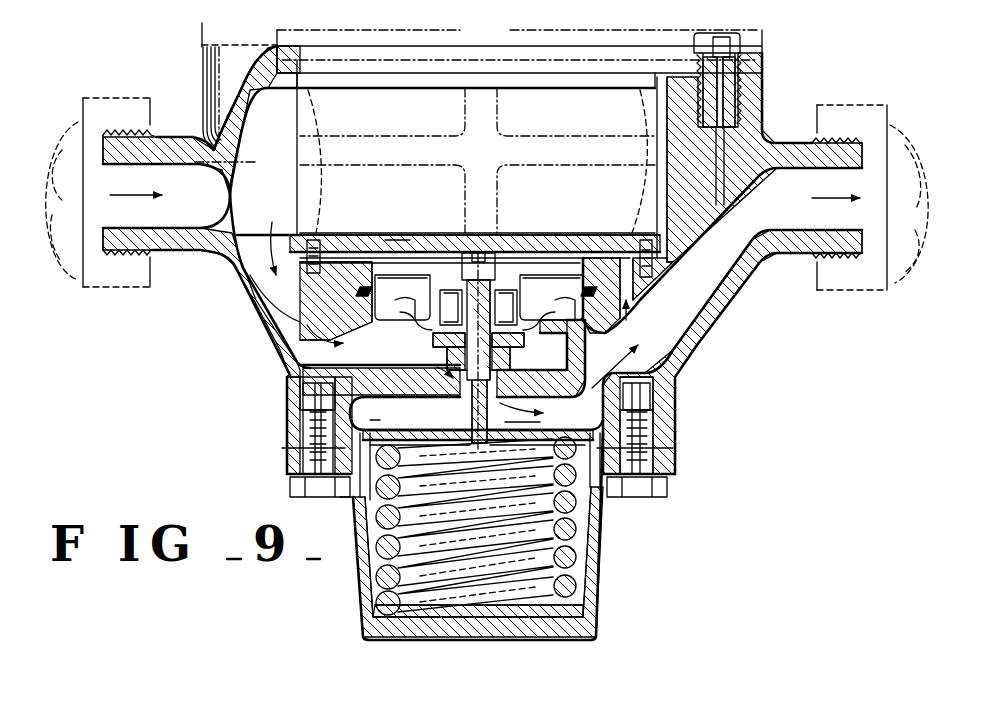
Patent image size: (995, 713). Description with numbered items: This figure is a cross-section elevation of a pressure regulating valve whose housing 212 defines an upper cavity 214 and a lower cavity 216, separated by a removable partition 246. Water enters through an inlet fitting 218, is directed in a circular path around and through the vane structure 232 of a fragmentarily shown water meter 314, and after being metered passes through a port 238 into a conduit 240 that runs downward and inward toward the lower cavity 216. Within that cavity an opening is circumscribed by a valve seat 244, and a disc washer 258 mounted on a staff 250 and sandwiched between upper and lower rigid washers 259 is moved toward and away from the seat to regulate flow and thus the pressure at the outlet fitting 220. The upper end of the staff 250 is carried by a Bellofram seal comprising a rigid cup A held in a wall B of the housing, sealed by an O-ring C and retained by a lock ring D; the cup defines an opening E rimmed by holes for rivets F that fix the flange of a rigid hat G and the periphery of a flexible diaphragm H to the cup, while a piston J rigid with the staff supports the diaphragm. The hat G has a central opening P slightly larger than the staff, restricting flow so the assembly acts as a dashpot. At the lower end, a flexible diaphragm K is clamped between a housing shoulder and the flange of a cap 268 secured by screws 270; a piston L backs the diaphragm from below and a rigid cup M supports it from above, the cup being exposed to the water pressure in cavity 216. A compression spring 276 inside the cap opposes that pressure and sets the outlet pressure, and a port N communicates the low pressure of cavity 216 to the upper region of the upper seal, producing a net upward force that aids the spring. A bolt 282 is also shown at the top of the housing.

The housing 212 is at (258, 338).
The upper cavity 214 is at (590, 125).
The lower cavity 216 is at (588, 416).
The inlet fitting 218 is at (183, 245).
The outlet fitting 220 is at (792, 247).
The vane structure 232 is at (348, 135).
The port 238 is at (270, 248).
The conduit 240 is at (268, 328).
The valve seat 244 is at (528, 352).
The partition 246 is at (560, 240).
The staff 250 is at (468, 392).
The disc washer 258 is at (435, 340).
The rigid discs or washers 259 is at (445, 356).
The cap 268 is at (656, 463).
The screws 270 is at (662, 490).
The compression spring 276 is at (577, 553).
The screw 282 is at (742, 78).
The water meter 314 is at (506, 42).
The rigid cup A is at (375, 292).
The wall B is at (289, 304).
The O-ring C is at (615, 357).
The lock ring D is at (397, 240).
The opening E is at (432, 322).
The rivets F is at (551, 297).
The rigid hat G is at (528, 300).
The flexible diaphragm H is at (522, 330).
The piston J is at (451, 307).
The flexible diaphragm K is at (600, 500).
The piston L is at (353, 493).
The rigid cup M is at (398, 425).
The port N is at (634, 308).
The central opening P is at (510, 242).